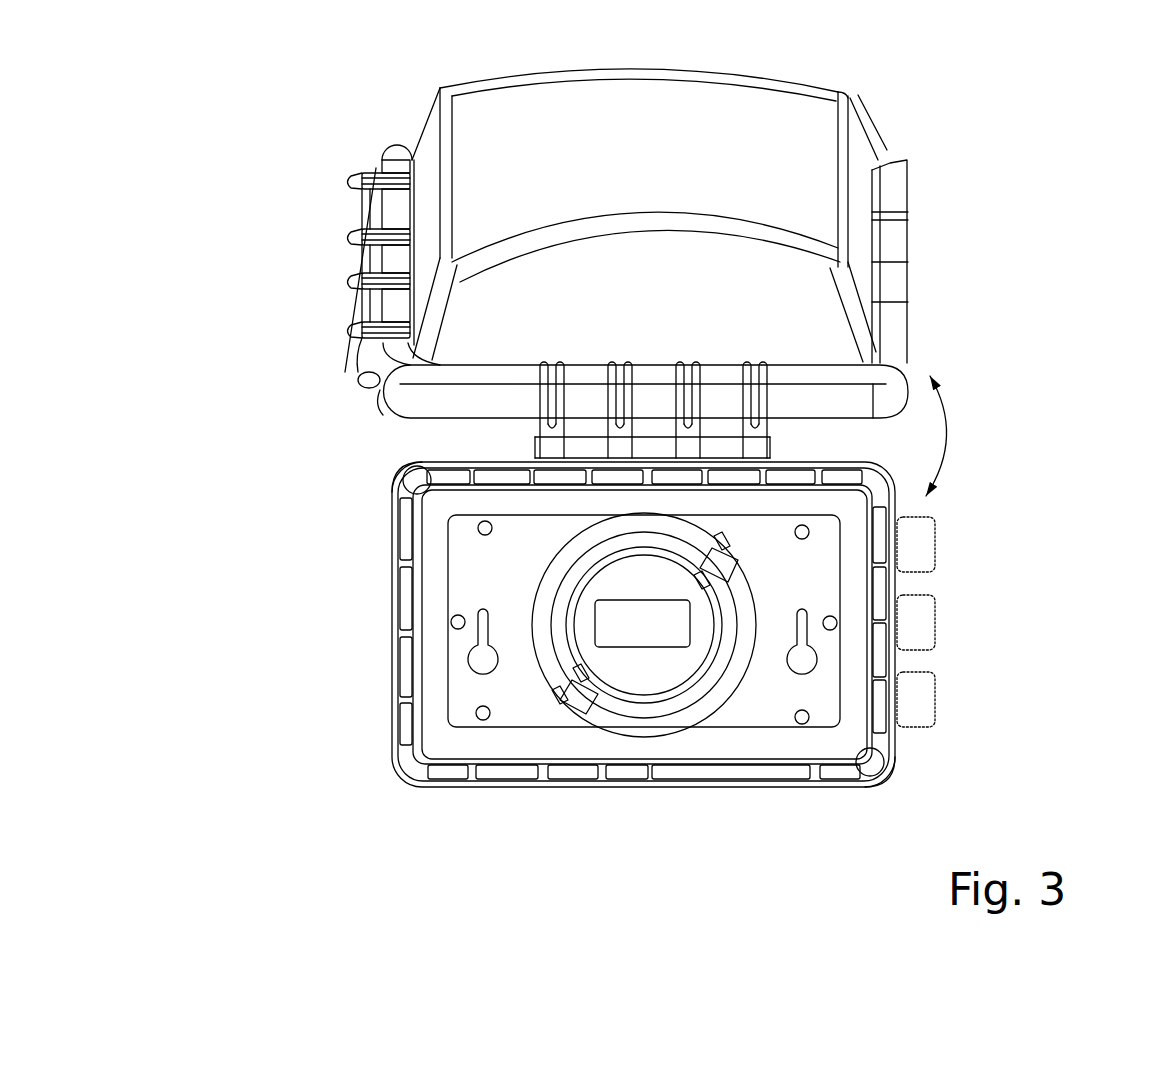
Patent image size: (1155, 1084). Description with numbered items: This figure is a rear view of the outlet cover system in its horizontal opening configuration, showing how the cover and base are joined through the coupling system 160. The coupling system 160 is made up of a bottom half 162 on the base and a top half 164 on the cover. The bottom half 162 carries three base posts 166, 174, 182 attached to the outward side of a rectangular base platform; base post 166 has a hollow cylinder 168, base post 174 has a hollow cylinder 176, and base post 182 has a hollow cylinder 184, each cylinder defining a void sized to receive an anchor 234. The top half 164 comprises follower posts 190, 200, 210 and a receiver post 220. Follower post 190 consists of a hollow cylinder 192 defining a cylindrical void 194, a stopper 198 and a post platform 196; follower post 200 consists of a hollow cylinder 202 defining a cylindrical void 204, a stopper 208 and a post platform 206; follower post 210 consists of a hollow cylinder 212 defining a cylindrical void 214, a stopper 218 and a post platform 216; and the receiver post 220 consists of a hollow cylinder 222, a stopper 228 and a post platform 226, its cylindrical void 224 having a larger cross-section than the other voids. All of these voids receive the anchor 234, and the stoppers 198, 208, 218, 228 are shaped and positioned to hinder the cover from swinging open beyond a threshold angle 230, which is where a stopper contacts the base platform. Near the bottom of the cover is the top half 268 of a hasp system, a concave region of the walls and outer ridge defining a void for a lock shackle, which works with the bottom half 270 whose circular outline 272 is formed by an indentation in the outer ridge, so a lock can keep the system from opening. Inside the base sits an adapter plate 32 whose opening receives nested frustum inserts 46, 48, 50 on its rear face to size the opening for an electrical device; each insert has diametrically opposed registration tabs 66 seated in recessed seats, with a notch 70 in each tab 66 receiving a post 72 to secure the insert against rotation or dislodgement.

The coupling system 160 is at (181, 855).
The bottom half 162 is at (1023, 502).
The top half 164 is at (223, 197).
The adapter plate 32 is at (465, 696).
The frustum insert 46 is at (718, 690).
The frustum insert 48 is at (680, 695).
The frustum insert 50 is at (633, 683).
The registration tab 66 is at (745, 565).
The notch 70 is at (605, 685).
The post 72 is at (692, 570).
The base post 166 is at (973, 507).
The hollow cylinder 168 is at (917, 530).
The base post 174 is at (973, 587).
The hollow cylinder 176 is at (910, 612).
The base post 182 is at (968, 667).
The hollow cylinder 184 is at (915, 686).
The follower post 190 is at (256, 207).
The hollow cylinder 192 is at (355, 219).
The cylindrical void 194 is at (353, 240).
The post platform 196 is at (412, 172).
The stopper 198 is at (352, 230).
The follower post 200 is at (256, 257).
The hollow cylinder 202 is at (355, 270).
The cylindrical void 204 is at (353, 290).
The post platform 206 is at (420, 222).
The stopper 208 is at (352, 280).
The follower post 210 is at (256, 308).
The hollow cylinder 212 is at (356, 318).
The cylindrical void 214 is at (353, 338).
The post platform 216 is at (413, 270).
The stopper 218 is at (352, 330).
The receiver post 220 is at (256, 357).
The hollow cylinder 222 is at (362, 390).
The cylindrical void 224 is at (370, 390).
The post platform 226 is at (416, 325).
The stopper 228 is at (352, 375).
The threshold angle 230 is at (957, 436).
The anchor 234 is at (536, 446).
The top half of hasp system 268 is at (888, 162).
The bottom half of hasp system 270 is at (410, 478).
The circular outline 272 is at (426, 468).